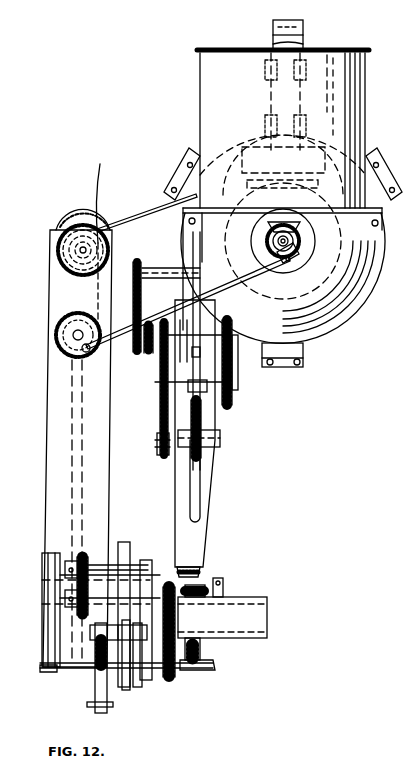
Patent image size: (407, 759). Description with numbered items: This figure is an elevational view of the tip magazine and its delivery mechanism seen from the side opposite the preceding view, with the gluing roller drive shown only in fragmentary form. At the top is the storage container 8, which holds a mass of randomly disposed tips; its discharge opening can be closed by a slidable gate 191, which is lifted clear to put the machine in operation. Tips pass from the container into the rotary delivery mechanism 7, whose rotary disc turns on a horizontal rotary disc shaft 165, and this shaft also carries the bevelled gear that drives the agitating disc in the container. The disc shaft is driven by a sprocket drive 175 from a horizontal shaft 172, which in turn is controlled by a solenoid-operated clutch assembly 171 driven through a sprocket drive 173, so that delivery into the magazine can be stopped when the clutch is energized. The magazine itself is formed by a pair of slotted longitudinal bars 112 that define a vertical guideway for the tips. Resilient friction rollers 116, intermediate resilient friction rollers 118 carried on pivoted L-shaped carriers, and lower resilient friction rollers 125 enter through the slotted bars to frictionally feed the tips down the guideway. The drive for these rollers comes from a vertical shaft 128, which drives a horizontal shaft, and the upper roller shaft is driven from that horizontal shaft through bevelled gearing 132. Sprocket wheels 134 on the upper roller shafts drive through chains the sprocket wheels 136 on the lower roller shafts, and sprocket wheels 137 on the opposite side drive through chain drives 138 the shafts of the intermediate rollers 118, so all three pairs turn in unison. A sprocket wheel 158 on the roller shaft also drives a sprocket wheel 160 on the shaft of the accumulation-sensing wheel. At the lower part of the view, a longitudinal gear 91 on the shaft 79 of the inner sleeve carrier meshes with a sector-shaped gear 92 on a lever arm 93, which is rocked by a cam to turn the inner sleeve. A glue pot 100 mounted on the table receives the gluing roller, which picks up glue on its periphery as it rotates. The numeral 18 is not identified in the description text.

The slidable gate 191 is at (298, 43).
The storage container 8 is at (353, 90).
The rotary disc shaft 165 is at (300, 232).
The sprocket drive 173 is at (112, 239).
The clutch assembly 171 is at (76, 224).
The horizontal shaft 172 is at (70, 226).
The sprocket wheel 160 is at (137, 262).
The sprocket drive 175 is at (147, 212).
The sprocket wheel 158 is at (135, 352).
The sprocket wheel 134 is at (160, 357).
The bevelled gearing 132 is at (72, 360).
The sprocket wheel 136 is at (160, 455).
The sprocket wheel 137 is at (233, 348).
The chain drive 138 is at (226, 396).
The resilient friction roller 116 is at (203, 378).
The resilient friction roller 118 is at (203, 412).
The resilient friction roller 125 is at (201, 463).
The slotted longitudinal bar 112 is at (207, 532).
The glue pot 100 is at (245, 589).
The rotary delivery mechanism 7 is at (406, 340).
The base 18 is at (403, 387).
The vertical shaft 128 is at (73, 665).
The shaft 79 is at (88, 655).
The lever arm 93 is at (97, 693).
The sector-shaped gear 92 is at (105, 668).
The longitudinal gear 91 is at (138, 680).